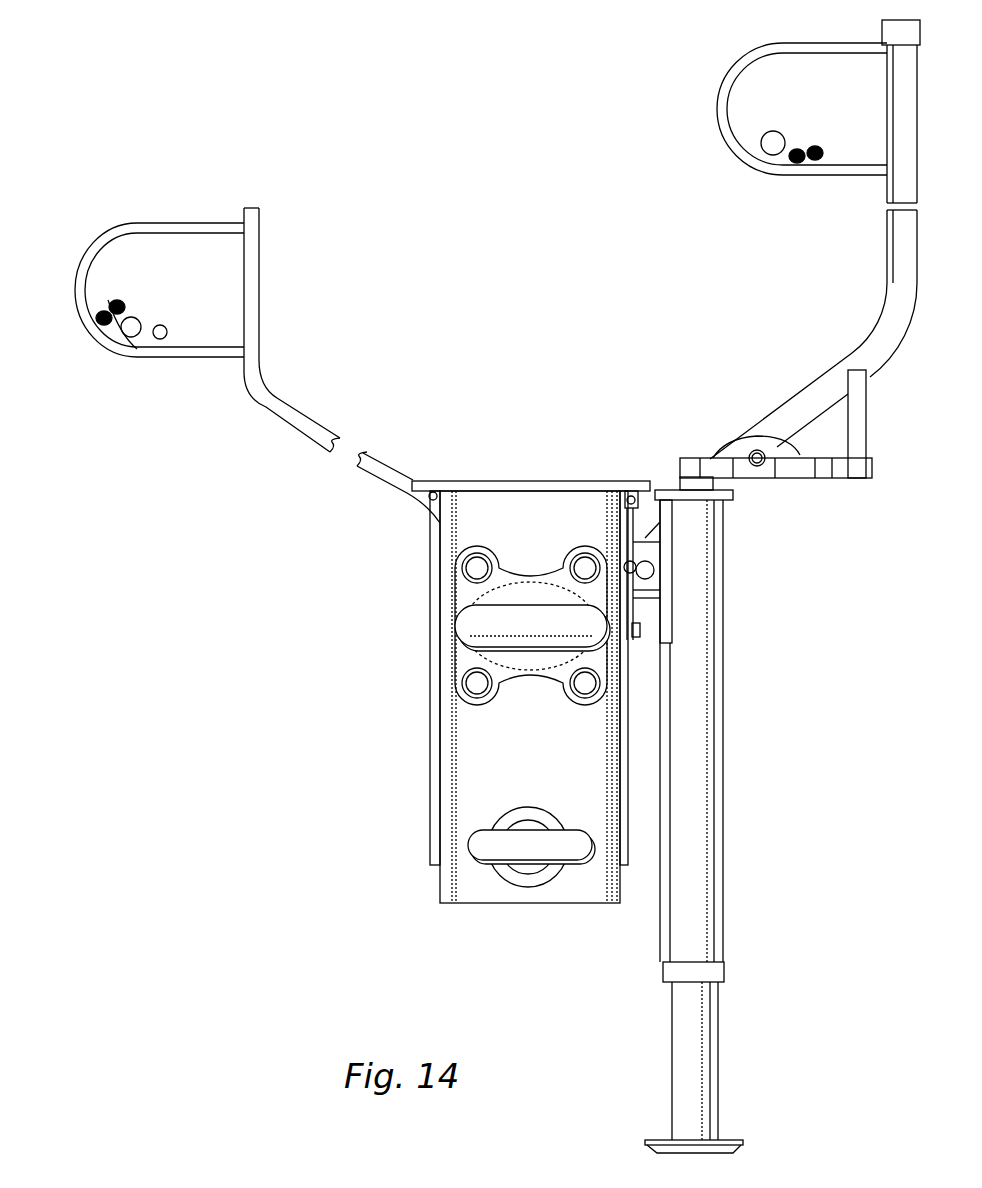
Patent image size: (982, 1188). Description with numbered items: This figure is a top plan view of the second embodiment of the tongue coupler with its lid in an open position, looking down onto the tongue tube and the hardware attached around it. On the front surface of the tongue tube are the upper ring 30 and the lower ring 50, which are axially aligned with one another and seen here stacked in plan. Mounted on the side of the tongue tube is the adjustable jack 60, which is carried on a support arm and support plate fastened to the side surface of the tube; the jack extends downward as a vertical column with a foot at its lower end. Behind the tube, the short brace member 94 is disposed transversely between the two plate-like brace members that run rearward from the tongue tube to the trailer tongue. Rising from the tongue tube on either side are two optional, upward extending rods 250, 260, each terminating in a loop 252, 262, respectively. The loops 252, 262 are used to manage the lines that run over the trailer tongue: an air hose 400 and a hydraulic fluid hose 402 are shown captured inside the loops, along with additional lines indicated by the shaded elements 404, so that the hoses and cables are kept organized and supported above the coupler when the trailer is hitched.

The upper ring 30 is at (456, 617).
The lower ring 50 is at (468, 845).
The adjustable jack 60 is at (723, 665).
The short brace member 94 is at (430, 716).
The upward extending rod 250 is at (268, 411).
The loop 252 is at (140, 222).
The upward extending rod 260 is at (887, 97).
The loop 262 is at (720, 96).
The air hose 400 is at (132, 353).
The hydraulic fluid hose 402 is at (163, 324).
The shaded balls 404 is at (108, 305).